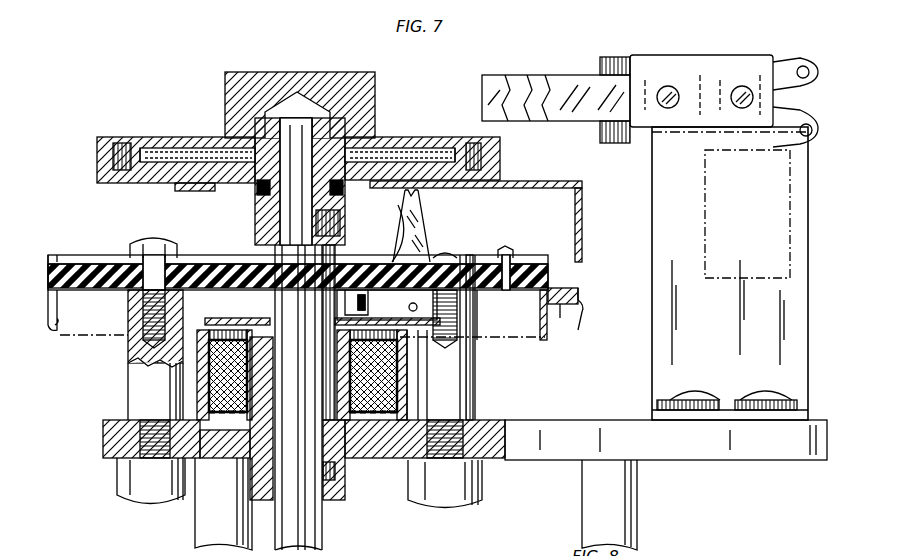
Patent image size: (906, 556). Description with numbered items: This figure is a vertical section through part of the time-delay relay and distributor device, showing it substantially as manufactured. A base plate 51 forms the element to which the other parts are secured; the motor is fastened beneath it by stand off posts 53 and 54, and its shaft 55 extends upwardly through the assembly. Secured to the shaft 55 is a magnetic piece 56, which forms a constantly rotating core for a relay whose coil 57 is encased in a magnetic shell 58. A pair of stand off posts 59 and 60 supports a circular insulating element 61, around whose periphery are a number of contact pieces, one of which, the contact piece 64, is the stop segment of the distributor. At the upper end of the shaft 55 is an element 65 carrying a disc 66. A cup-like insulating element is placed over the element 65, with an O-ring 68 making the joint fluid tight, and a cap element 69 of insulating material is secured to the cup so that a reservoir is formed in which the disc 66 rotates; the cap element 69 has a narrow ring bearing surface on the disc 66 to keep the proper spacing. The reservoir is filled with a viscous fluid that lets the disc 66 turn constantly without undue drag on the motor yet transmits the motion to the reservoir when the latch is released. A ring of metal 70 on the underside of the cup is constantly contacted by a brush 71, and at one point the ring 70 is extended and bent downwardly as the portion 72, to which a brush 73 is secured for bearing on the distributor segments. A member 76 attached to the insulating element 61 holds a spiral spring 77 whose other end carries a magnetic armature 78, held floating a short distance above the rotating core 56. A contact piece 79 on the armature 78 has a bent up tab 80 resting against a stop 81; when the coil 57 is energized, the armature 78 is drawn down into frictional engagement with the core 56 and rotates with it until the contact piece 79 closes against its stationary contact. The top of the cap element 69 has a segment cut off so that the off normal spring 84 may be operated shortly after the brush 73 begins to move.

The base plate 51 is at (108, 460).
The stand off post 53 is at (196, 535).
The stand off post 54 is at (585, 485).
The shaft 55 is at (316, 537).
The magnetic piece 56 is at (336, 492).
The coil 57 is at (400, 370).
The magnetic shell 58 is at (402, 397).
The stand off post 59 is at (132, 388).
The stand off post 60 is at (470, 365).
The circular insulating element 61 is at (93, 292).
The contact piece 64 is at (521, 263).
The element 65 is at (257, 228).
The disc 66 is at (418, 150).
The O-ring 68 is at (255, 190).
The cap element 69 is at (375, 100).
The ring of metal 70 is at (178, 190).
The brush 71 is at (418, 218).
The downwardly bent portion 72 is at (583, 218).
The brush 73 is at (553, 292).
The member 76 is at (206, 262).
The spiral spring 77 is at (265, 298).
The magnetic armature 78 is at (216, 323).
The contact piece 79 is at (354, 264).
The bent up tab 80 is at (374, 262).
The stop 81 is at (394, 258).
The off normal spring 84 is at (497, 82).